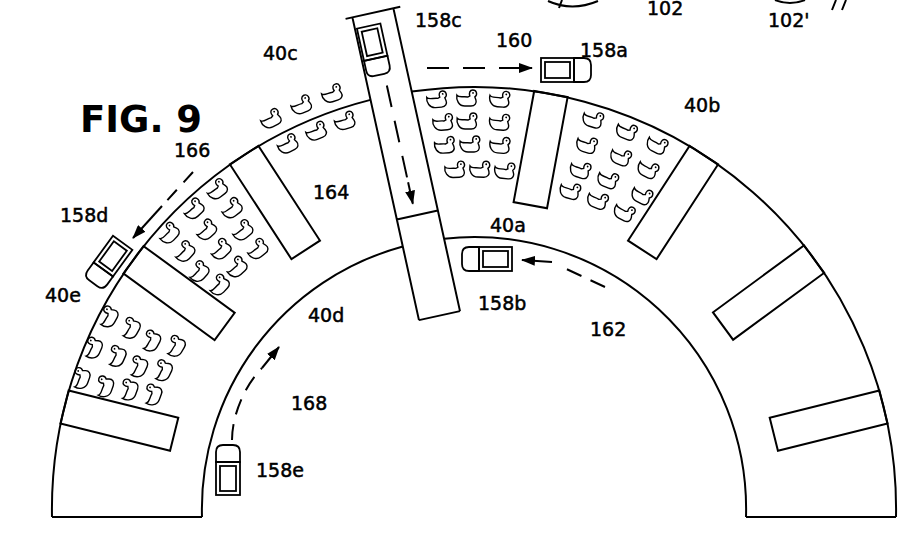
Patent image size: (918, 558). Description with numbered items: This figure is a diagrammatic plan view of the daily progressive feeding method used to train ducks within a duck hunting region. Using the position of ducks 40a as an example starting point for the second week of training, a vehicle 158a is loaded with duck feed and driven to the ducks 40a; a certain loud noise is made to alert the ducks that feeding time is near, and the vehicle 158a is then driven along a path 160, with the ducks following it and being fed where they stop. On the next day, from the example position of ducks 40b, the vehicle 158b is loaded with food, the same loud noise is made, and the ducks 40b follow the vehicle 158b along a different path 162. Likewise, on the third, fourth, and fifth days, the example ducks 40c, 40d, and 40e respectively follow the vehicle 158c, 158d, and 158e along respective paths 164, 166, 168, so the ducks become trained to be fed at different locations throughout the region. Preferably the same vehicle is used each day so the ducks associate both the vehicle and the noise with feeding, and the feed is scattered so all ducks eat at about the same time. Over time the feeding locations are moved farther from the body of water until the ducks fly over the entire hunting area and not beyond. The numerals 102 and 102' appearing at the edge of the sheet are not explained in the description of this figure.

The ducks 40a is at (466, 196).
The ducks 40b is at (640, 113).
The ducks 40c is at (292, 91).
The ducks 40d is at (258, 278).
The ducks 40e is at (70, 341).
The vehicle 158a is at (566, 58).
The vehicle 158b is at (488, 276).
The vehicle 158c is at (388, 40).
The vehicle 158d is at (110, 250).
The vehicle 158e is at (240, 472).
The path 160 is at (463, 66).
The path 162 is at (572, 273).
The path 164 is at (380, 150).
The path 166 is at (165, 197).
The path 168 is at (258, 396).
The partial view (adjacent figure) 102 is at (573, 4).
The partial view (adjacent figure) 102' is at (810, 5).